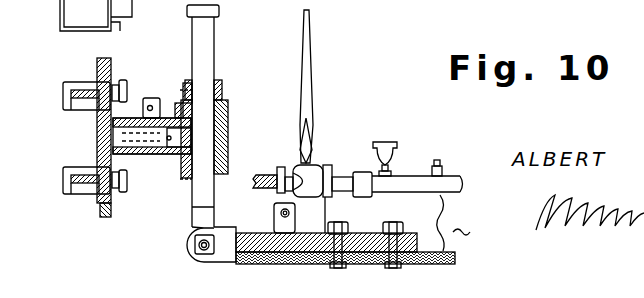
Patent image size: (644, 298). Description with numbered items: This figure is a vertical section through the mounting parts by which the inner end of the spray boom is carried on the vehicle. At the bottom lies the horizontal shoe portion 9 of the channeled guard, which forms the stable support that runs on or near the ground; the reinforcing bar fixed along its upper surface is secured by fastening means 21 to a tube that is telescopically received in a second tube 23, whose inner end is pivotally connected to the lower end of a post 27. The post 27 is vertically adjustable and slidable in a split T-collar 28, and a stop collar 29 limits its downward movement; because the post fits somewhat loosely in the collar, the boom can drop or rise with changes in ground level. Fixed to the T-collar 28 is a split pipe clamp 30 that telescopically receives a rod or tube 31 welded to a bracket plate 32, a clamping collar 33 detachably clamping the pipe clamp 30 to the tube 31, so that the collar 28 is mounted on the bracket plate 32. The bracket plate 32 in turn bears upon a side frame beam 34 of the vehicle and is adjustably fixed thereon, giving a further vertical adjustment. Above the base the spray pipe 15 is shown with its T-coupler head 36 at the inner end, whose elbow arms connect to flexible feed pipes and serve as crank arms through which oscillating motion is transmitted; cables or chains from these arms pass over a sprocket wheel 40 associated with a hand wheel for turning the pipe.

The shoe portion 9 is at (418, 263).
The spray pipe 15 is at (420, 175).
The fastening means 21 is at (370, 234).
The second tube 23 is at (228, 258).
The post 27 is at (214, 56).
The split T-collar 28 is at (228, 132).
The stop collar 29 is at (222, 88).
The split pipe clamp 30 is at (170, 156).
The rod or tube 31 is at (145, 156).
The bracket plate 32 is at (104, 215).
The clamping collar 33 is at (151, 98).
The side frame beam 34 is at (96, 147).
The T-coupler head 36 is at (315, 168).
The sprocket wheel 40 is at (264, 168).